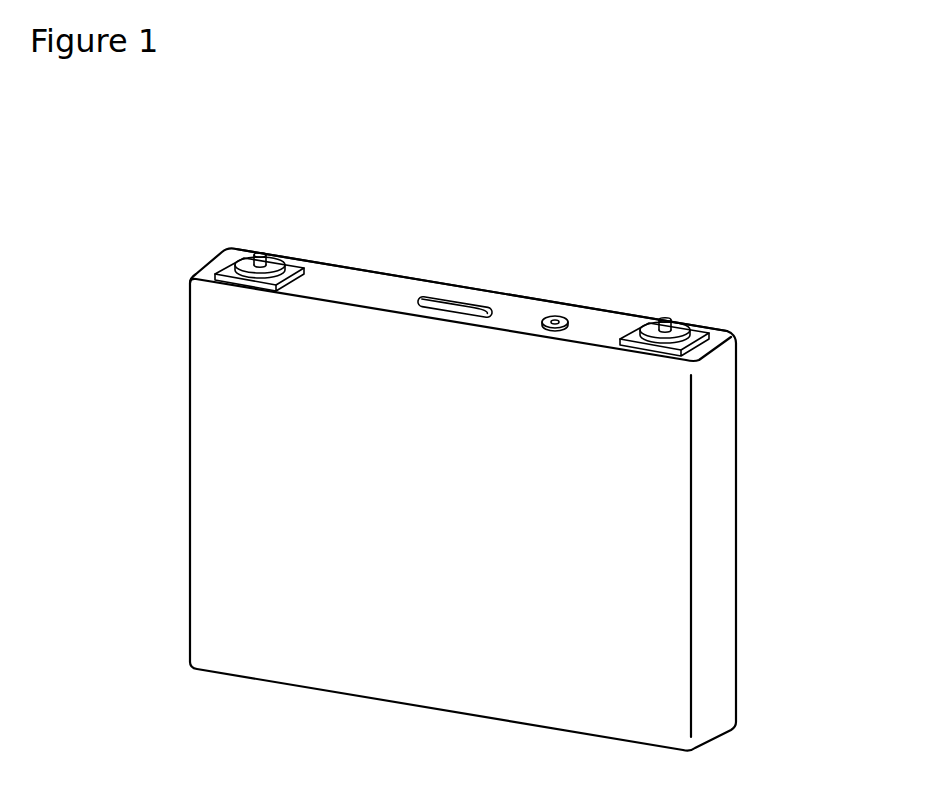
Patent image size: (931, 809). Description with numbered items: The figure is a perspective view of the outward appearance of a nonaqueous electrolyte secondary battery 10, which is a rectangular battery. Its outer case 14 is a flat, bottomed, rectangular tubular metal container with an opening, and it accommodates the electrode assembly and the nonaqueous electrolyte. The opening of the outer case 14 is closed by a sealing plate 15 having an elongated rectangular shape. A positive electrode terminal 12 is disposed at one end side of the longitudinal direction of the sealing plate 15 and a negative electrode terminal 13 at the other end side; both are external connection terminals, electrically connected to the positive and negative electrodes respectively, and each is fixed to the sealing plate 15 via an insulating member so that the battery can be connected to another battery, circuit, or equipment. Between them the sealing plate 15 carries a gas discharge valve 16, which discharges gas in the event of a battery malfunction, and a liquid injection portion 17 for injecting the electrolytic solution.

The nonaqueous electrolyte secondary battery 10 is at (792, 218).
The positive electrode terminal 12 is at (666, 318).
The negative electrode terminal 13 is at (259, 253).
The outer case 14 is at (722, 472).
The sealing plate 15 is at (362, 293).
The gas discharge valve 16 is at (462, 302).
The liquid injection portion 17 is at (556, 316).